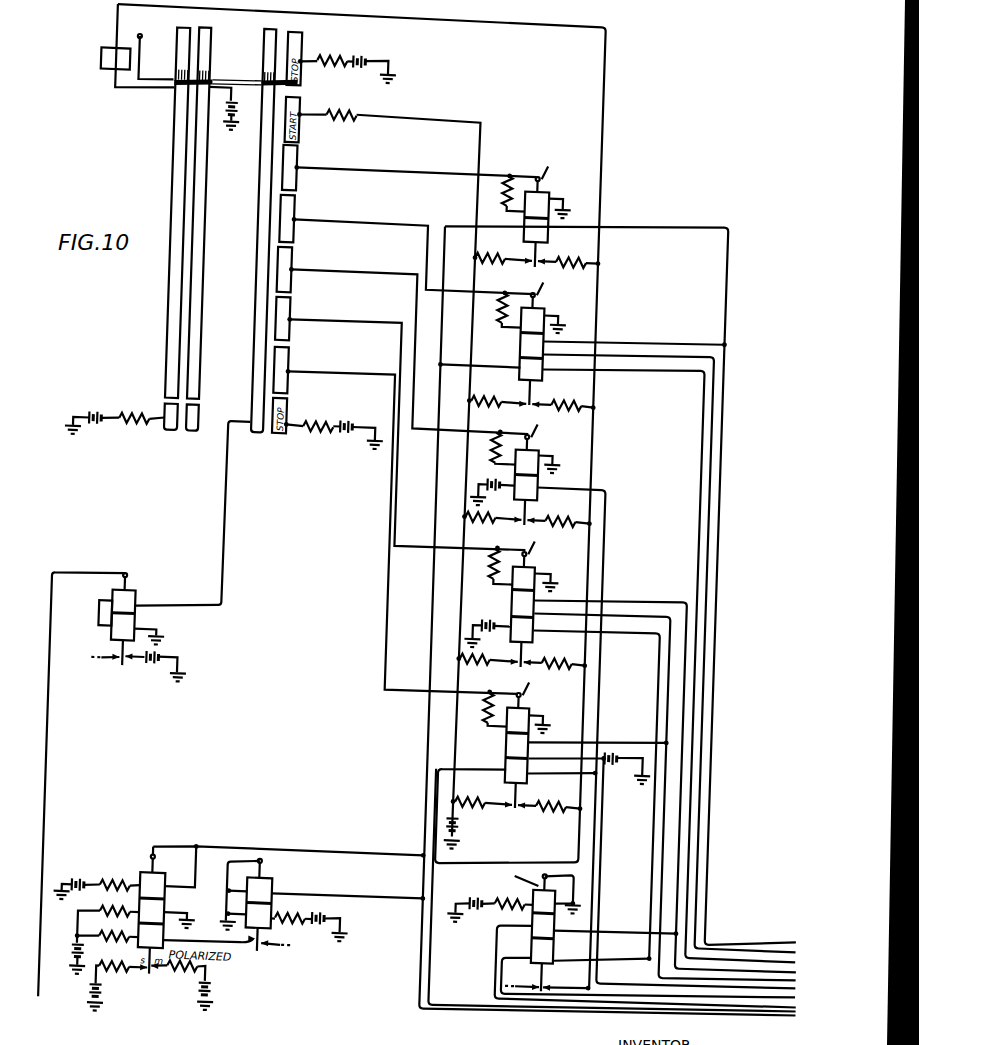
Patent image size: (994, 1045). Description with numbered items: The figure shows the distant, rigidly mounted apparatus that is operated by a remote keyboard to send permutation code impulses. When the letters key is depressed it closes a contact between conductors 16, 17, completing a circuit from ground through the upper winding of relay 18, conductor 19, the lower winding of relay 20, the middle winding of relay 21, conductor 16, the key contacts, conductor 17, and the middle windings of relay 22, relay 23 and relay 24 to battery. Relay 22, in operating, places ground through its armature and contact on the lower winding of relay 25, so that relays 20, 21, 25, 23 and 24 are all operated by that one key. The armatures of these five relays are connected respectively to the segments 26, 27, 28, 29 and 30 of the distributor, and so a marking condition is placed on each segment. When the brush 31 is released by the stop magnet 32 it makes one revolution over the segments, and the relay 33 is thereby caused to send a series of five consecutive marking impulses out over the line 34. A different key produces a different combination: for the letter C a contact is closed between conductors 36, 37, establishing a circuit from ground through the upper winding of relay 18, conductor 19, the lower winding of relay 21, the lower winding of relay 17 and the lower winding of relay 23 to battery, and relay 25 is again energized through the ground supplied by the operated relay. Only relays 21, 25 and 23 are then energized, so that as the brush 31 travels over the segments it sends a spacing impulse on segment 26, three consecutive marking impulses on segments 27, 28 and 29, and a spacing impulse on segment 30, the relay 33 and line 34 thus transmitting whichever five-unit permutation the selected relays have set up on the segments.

The conductor 16 is at (650, 335).
The conductor 17 is at (511, 945).
The relay 18 is at (284, 890).
The conductor 19 is at (436, 751).
The relay 20 is at (515, 218).
The relay 21 is at (515, 344).
The relay 22 is at (546, 941).
The relay 23 is at (515, 602).
The relay 24 is at (514, 747).
The relay 25 is at (537, 483).
The segment 26 is at (286, 164).
The segment 27 is at (286, 212).
The segment 28 is at (285, 264).
The segment 29 is at (285, 314).
The segment 30 is at (285, 364).
The brush 31 is at (225, 92).
The stop magnet 32 is at (87, 72).
The relay 33 is at (116, 606).
The line 34 is at (56, 751).
The conductor 36 is at (640, 376).
The conductor 37 is at (517, 966).